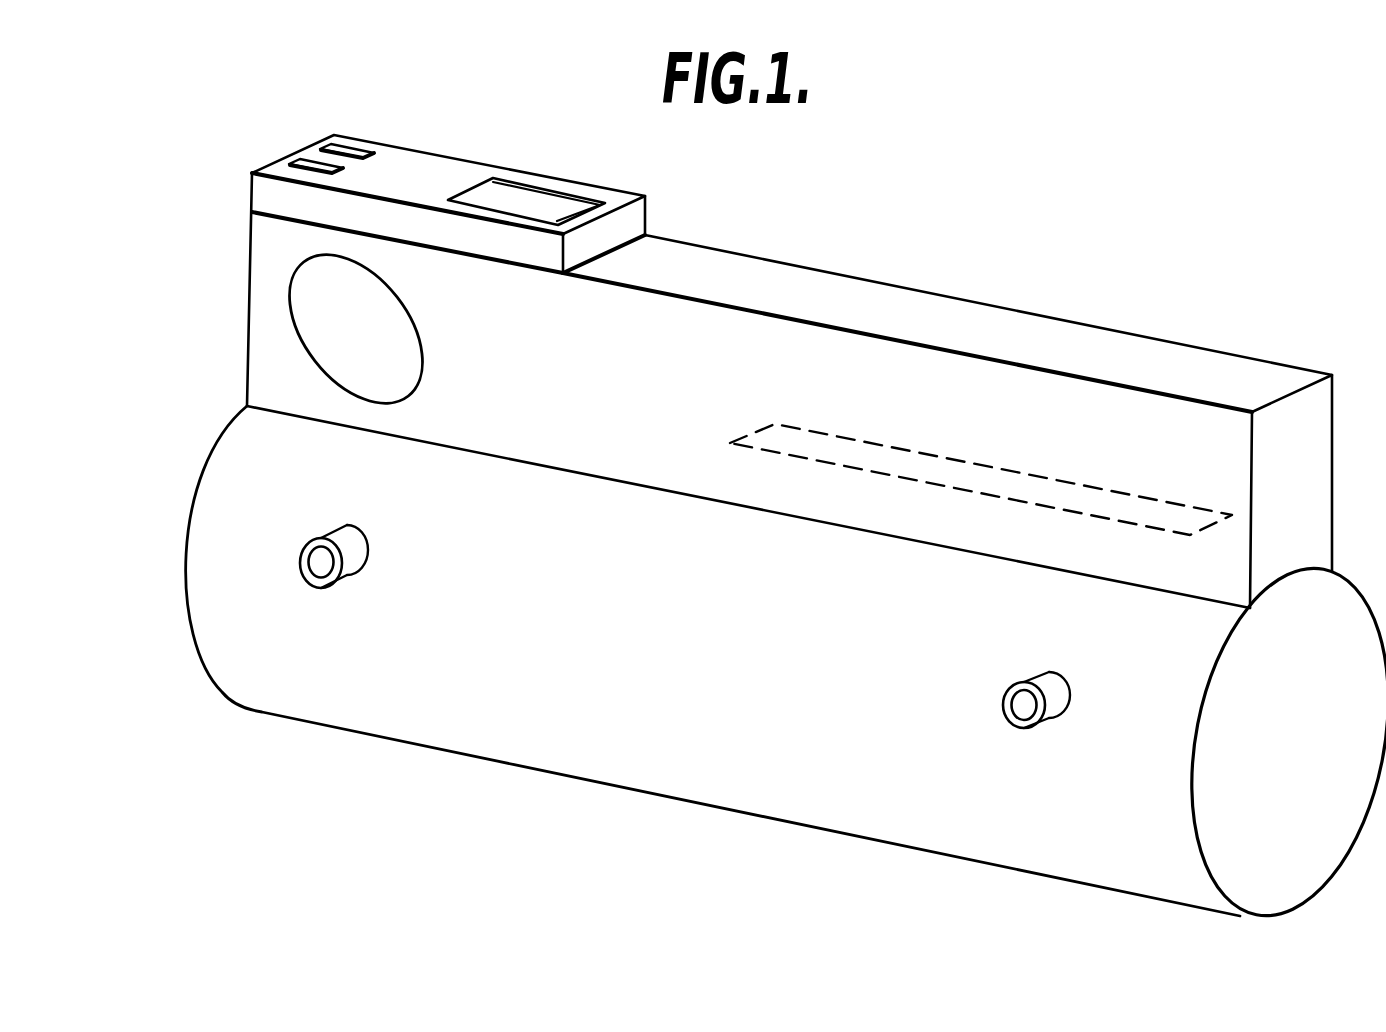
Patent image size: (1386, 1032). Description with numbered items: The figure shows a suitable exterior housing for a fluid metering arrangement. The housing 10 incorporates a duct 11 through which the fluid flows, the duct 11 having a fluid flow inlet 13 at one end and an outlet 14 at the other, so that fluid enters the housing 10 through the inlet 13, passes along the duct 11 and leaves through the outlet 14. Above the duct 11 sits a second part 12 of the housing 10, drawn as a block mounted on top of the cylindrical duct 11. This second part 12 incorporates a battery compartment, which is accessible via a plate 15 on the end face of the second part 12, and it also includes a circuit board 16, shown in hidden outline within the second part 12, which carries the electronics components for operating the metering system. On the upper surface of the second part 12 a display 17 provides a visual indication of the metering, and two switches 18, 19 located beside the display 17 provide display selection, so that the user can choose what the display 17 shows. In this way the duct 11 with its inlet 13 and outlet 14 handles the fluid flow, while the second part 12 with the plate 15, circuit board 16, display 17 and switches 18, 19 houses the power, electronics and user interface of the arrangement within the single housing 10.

The housing 10 is at (1045, 293).
The duct 11 is at (237, 658).
The second part 12 is at (275, 358).
The fluid flow inlet 13 is at (1057, 703).
The outlet 14 is at (360, 560).
The plate 15 is at (307, 300).
The circuit board 16 is at (993, 467).
The display 17 is at (512, 195).
The switch 18 is at (305, 157).
The switch 19 is at (338, 137).